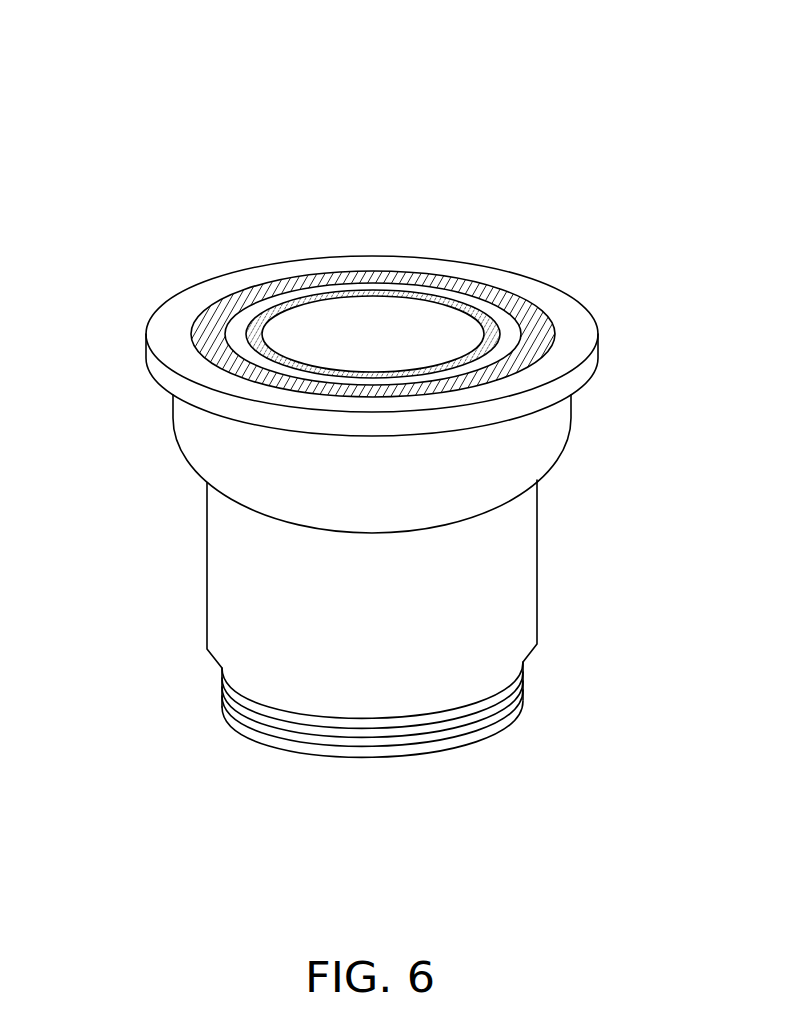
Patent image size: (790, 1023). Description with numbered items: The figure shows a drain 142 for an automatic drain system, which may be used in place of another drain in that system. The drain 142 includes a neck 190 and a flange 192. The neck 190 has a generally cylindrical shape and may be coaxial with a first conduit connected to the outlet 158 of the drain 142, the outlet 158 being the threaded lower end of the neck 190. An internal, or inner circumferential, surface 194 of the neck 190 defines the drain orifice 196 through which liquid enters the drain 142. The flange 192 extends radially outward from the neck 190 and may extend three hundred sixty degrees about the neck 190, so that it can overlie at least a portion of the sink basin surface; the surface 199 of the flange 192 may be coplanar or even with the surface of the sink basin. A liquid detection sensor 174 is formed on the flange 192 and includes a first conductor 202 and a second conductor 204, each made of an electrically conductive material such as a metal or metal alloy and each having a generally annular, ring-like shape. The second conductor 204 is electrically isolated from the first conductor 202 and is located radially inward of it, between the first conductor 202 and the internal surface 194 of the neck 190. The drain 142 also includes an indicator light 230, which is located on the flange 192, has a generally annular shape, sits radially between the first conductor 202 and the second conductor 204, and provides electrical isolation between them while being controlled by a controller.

The drain 142 is at (138, 122).
The liquid detection sensor 174 is at (390, 137).
The second conductor 204 is at (380, 292).
The first conductor 202 is at (440, 280).
The indicator light 230 is at (504, 318).
The drain orifice 196 is at (316, 288).
The internal surface 194 is at (283, 333).
The flange 192 is at (165, 337).
The surface 199 is at (586, 329).
The neck 190 is at (127, 373).
The outlet 158 is at (312, 753).